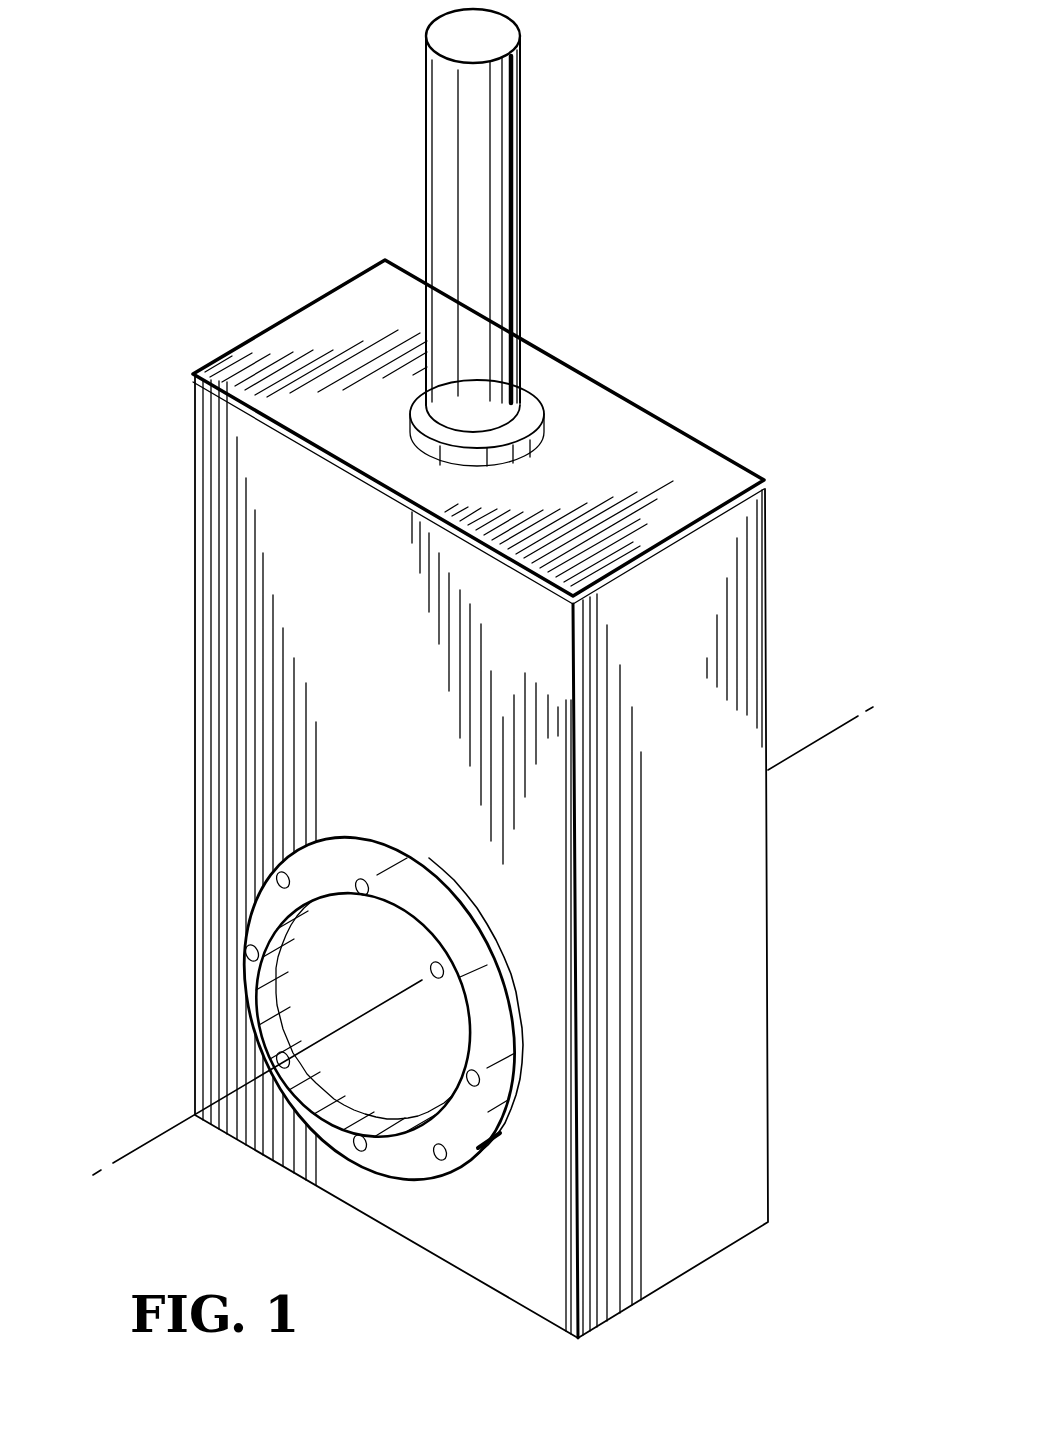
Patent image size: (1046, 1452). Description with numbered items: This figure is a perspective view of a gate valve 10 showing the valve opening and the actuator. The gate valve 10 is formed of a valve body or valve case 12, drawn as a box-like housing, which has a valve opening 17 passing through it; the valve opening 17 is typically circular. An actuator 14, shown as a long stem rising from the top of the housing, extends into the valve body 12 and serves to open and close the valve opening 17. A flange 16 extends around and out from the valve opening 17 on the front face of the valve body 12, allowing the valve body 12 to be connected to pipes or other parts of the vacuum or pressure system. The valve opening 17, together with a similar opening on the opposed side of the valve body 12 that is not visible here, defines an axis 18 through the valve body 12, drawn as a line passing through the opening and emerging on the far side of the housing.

The gate valve 10 is at (483, 673).
The valve body 12 is at (278, 503).
The actuator 14 is at (447, 122).
The flange 16 is at (268, 909).
The valve opening 17 is at (338, 984).
The axis 18 is at (160, 1134).